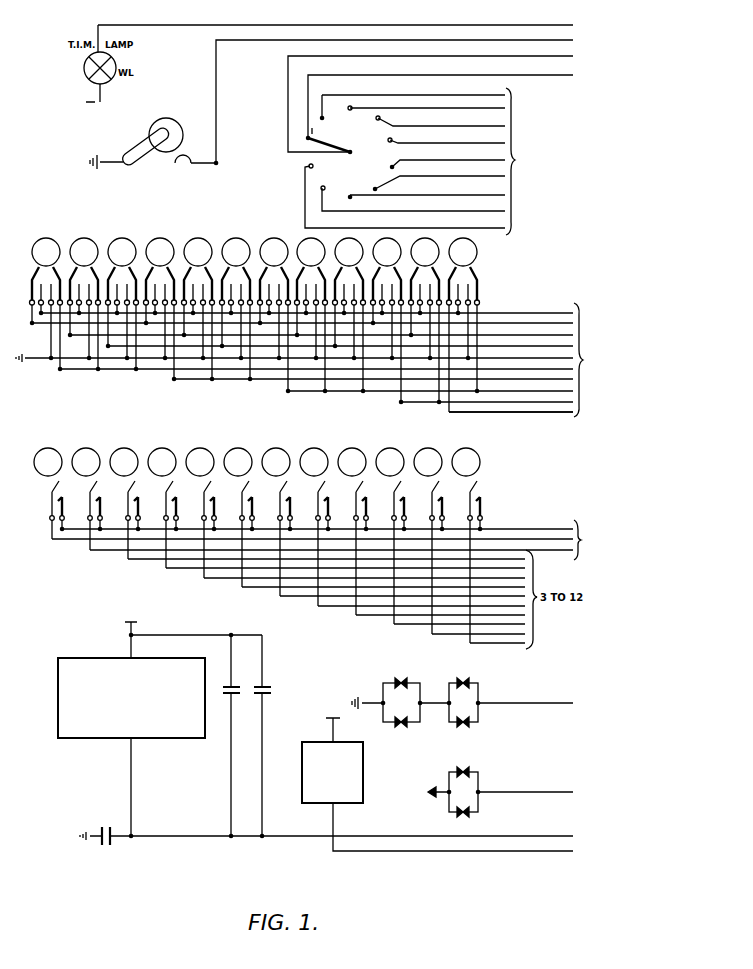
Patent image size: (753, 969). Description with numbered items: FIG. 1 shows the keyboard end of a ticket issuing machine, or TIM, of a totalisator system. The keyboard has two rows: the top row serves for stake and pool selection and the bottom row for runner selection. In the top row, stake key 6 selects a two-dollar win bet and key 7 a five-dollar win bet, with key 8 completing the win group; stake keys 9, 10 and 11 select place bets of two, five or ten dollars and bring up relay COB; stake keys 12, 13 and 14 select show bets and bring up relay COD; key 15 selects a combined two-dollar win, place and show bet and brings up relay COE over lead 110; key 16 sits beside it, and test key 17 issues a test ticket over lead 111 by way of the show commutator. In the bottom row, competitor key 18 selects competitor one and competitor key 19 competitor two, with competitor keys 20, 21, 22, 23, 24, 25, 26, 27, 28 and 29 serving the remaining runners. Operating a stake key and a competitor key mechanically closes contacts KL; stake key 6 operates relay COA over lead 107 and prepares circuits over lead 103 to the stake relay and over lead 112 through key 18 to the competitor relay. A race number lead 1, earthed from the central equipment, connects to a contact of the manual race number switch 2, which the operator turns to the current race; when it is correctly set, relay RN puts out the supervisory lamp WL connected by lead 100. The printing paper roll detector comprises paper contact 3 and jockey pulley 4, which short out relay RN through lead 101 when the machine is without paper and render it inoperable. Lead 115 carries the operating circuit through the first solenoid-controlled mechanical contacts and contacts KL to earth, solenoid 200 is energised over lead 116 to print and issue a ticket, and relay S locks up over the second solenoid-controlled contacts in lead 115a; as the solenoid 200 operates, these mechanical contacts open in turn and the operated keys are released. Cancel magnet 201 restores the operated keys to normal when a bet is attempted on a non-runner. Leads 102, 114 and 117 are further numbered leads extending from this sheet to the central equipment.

The race number lead 1 is at (448, 103).
The race number switch 2 is at (431, 161).
The paper contact 3 is at (197, 150).
The jockey pulley 4 is at (180, 112).
The stake key 6 is at (46, 300).
The stake key 7 is at (84, 300).
The $10 win bet switch 8 is at (122, 300).
The place stake key 9 is at (160, 305).
The place stake key 10 is at (198, 305).
The place stake key 11 is at (236, 305).
The show stake key 12 is at (274, 311).
The show stake key 13 is at (311, 311).
The show stake key 14 is at (349, 311).
The combined bet stake key 15 is at (387, 316).
The $5 combination bet switch 16 is at (425, 316).
The test key 17 is at (463, 321).
The competitor key 18 is at (49, 487).
The competitor key 19 is at (87, 492).
The horse 3 selector switch 20 is at (125, 497).
The horse 4 selector switch 21 is at (163, 501).
The horse 5 selector switch 22 is at (201, 506).
The horse 6 selector switch 23 is at (239, 511).
The horse 7 selector switch 24 is at (277, 515).
The horse 8 selector switch 25 is at (315, 520).
The horse 9 selector switch 26 is at (353, 525).
The horse 10 selector switch 27 is at (391, 529).
The horse 11 selector switch 28 is at (429, 534).
The horse 12 selector switch 29 is at (467, 539).
The lead 100 is at (350, 25).
The lead 101 is at (409, 98).
The race selector common line 102 is at (445, 100).
The lead 103 is at (536, 312).
The lead 107 is at (543, 357).
The lead 110 is at (545, 403).
The lead 111 is at (320, 360).
The lead 112 is at (334, 540).
The horse switch line 114 is at (329, 550).
The lead 115 is at (477, 696).
The lead 115a is at (519, 785).
The lead 116 is at (341, 830).
The cancel magnet line 117 is at (468, 831).
The solenoid 200 is at (179, 733).
The cancel magnet 201 is at (363, 752).